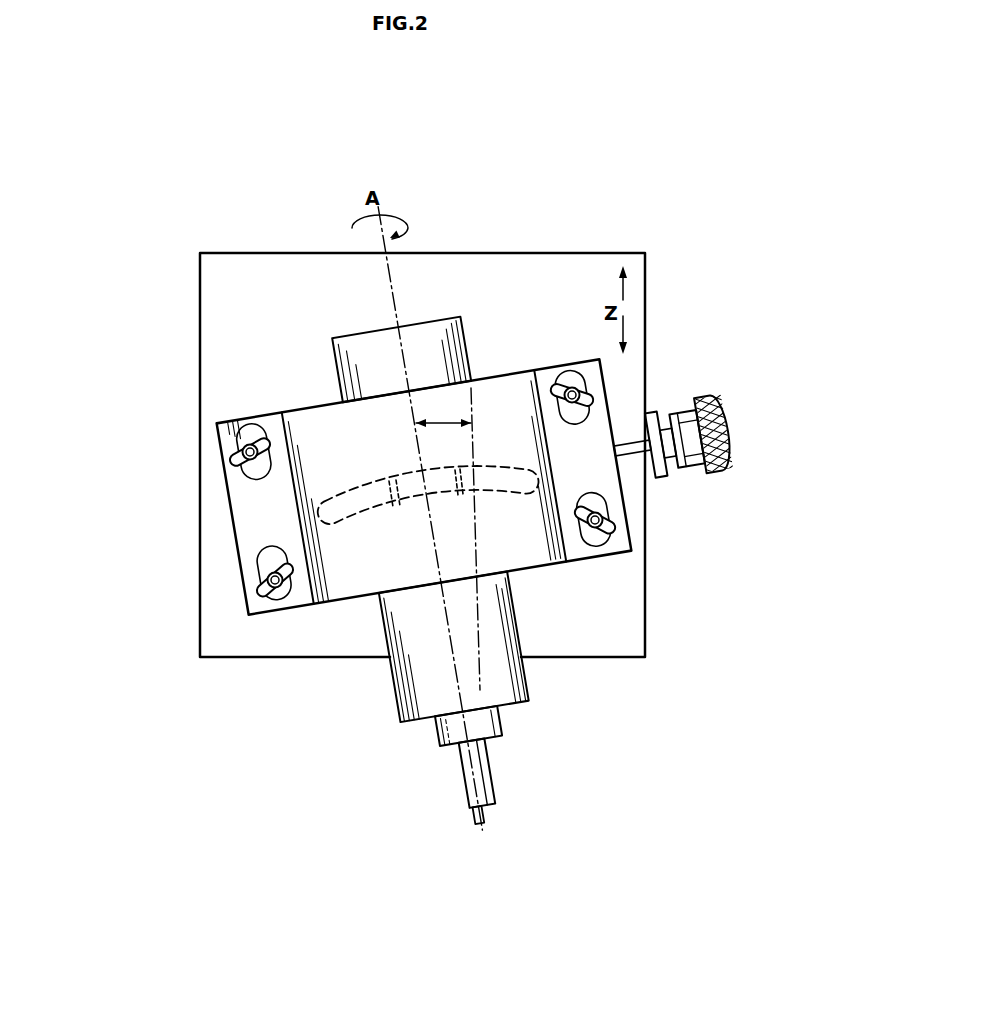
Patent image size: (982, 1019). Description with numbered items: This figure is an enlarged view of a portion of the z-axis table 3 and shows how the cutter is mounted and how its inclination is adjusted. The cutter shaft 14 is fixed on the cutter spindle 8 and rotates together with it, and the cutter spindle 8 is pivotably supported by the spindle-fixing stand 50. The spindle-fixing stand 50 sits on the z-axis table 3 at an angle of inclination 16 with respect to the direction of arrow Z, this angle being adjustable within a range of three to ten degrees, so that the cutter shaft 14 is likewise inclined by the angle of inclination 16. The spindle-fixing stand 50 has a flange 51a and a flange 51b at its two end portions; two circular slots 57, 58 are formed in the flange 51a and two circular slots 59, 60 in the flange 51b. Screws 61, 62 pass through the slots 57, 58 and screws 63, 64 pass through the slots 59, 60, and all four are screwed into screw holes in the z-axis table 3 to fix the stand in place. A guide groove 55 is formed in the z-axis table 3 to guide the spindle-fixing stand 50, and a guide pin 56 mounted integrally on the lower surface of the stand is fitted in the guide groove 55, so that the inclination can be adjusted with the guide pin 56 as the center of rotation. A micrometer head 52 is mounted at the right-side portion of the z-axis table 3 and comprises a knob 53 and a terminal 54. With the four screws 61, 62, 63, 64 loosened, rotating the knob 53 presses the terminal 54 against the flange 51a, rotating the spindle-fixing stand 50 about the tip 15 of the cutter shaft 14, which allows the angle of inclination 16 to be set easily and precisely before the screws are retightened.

The z-axis table 3 is at (218, 317).
The cutter spindle 8 is at (398, 700).
The cutter shaft 14 is at (486, 773).
The tip 15 is at (474, 818).
The angle of inclination 16 is at (437, 421).
The spindle-fixing stand 50 is at (508, 390).
The flange 51a is at (600, 560).
The flange 51b is at (308, 604).
The micrometer head 52 is at (696, 410).
The knob 53 is at (724, 466).
The terminal 54 is at (628, 458).
The guide groove 55 is at (325, 511).
The guide pin 56 is at (377, 490).
The slot 57 is at (600, 393).
The slot 58 is at (621, 514).
The slot 59 is at (236, 430).
The slot 60 is at (250, 598).
The screw 61 is at (590, 408).
The screw 62 is at (617, 533).
The screw 63 is at (245, 476).
The screw 64 is at (272, 578).